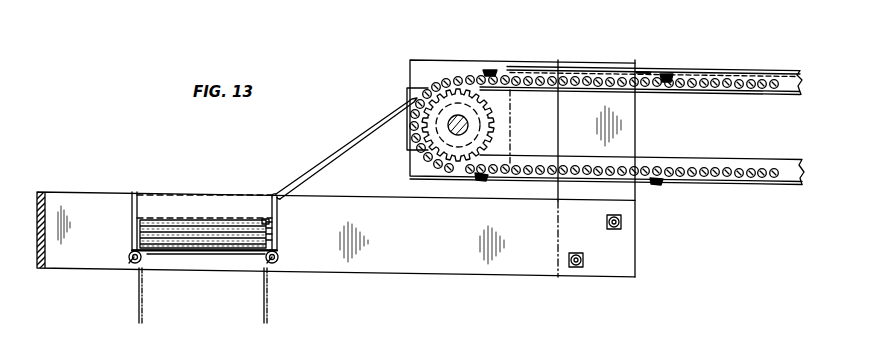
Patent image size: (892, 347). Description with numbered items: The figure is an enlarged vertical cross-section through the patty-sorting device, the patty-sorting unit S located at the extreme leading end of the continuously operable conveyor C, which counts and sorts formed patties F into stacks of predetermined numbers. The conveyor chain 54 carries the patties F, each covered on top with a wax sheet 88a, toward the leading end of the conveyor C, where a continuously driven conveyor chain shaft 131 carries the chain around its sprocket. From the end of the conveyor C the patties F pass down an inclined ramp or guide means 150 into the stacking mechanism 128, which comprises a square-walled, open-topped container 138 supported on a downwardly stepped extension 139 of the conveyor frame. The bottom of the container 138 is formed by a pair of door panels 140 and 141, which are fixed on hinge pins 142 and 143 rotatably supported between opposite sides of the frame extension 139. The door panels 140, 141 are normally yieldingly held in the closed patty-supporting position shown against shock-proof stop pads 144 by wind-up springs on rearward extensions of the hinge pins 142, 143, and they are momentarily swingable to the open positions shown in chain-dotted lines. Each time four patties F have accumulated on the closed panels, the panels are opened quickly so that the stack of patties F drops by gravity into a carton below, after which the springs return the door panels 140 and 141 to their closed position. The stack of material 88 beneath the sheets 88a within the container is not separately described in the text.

The downwardly stepped extension 139 is at (115, 192).
The stacking mechanism 128 is at (180, 176).
The shock-proof stop pads 144 is at (208, 222).
The wax sheets 88a is at (257, 218).
The sheet stack / chain 88 is at (135, 226).
The container 138 is at (277, 232).
The hinge pin 143 is at (130, 262).
The hinge pin 142 is at (276, 264).
The door panel 141 is at (168, 254).
The door panel 140 is at (264, 312).
The inclined ramp or guide means 150 is at (337, 128).
The patty-sorting unit S is at (361, 72).
The conveyor chain shaft 131 is at (468, 126).
The conveyor chain 54 is at (642, 134).
The conveyor C is at (746, 67).
The patties F is at (205, 248).